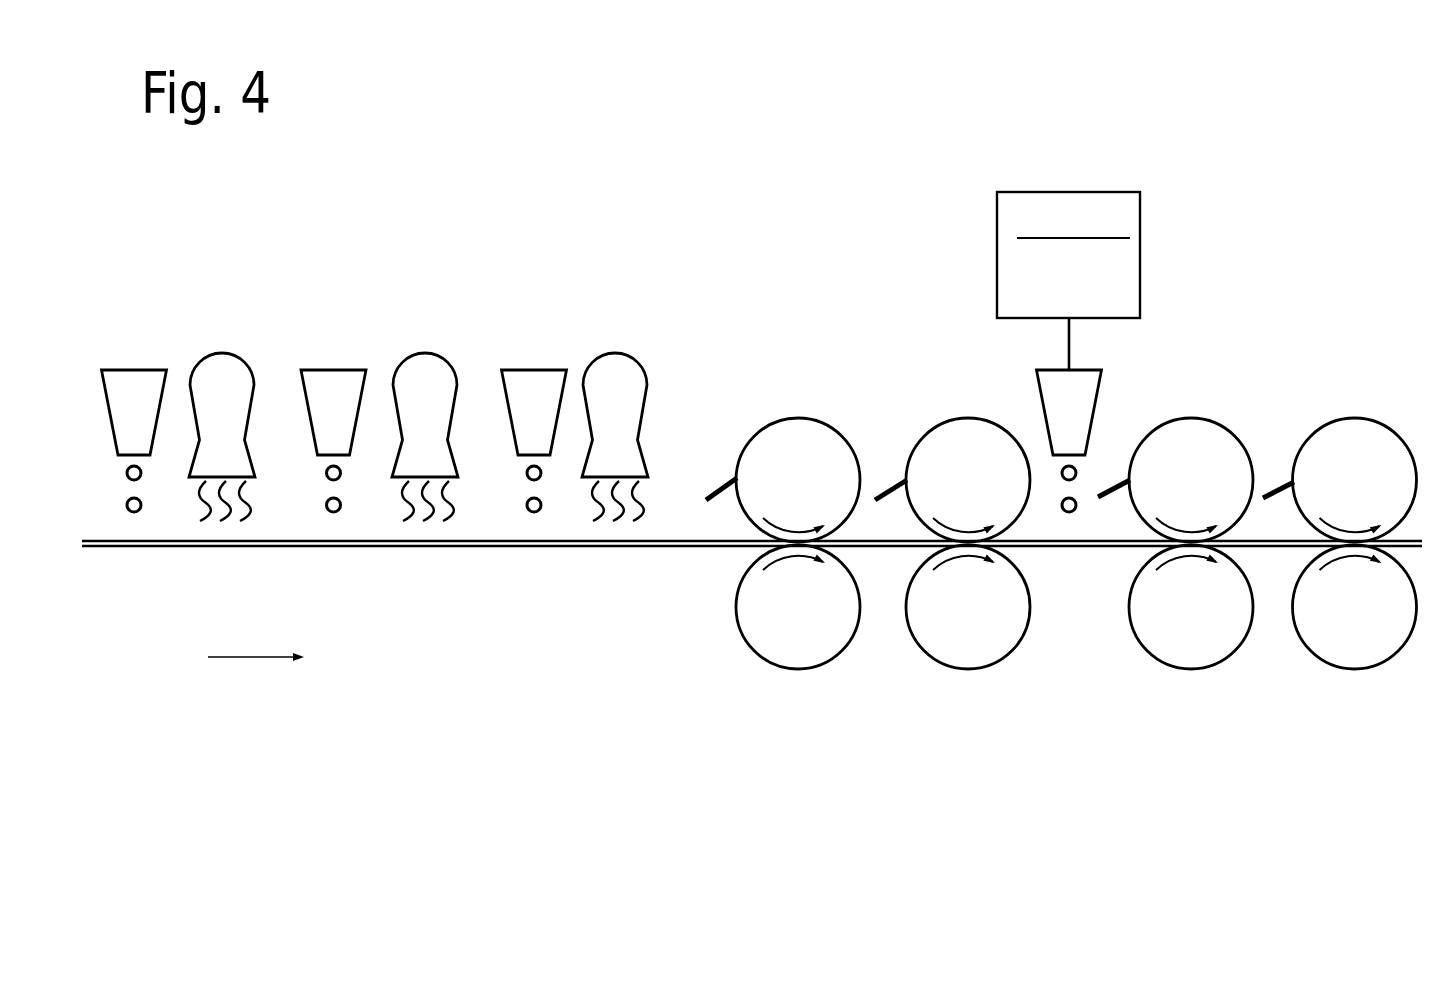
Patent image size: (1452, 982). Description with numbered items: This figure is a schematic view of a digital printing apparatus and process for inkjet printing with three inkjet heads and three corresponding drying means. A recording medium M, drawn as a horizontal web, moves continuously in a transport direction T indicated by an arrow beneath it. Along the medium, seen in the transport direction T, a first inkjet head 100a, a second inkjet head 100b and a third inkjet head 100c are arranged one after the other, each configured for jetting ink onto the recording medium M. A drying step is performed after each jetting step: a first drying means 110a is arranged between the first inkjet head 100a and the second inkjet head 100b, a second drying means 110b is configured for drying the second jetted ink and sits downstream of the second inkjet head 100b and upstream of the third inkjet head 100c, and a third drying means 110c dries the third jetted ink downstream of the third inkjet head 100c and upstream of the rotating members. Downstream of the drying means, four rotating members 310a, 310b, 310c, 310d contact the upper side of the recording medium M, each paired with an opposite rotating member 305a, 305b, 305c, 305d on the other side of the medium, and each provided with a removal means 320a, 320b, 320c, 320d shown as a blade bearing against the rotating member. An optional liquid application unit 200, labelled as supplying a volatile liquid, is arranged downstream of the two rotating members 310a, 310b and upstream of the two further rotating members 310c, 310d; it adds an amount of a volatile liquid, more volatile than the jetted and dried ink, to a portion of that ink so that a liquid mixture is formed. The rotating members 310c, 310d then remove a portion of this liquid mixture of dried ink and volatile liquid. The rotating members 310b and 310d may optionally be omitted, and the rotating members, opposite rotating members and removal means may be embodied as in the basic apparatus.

The first inkjet head 100a is at (132, 392).
The second inkjet head 100b is at (319, 378).
The third inkjet head 100c is at (528, 378).
The first drying means 110a is at (212, 372).
The second drying means 110b is at (417, 378).
The third drying means 110c is at (615, 377).
The liquid application unit 200 is at (971, 299).
The rotating member 310a is at (805, 443).
The rotating member 310b is at (977, 443).
The rotating member 310c is at (1212, 447).
The rotating member 310d is at (1367, 442).
The removal means 320a is at (723, 488).
The removal means 320b is at (907, 483).
The removal means 320c is at (1113, 487).
The removal means 320d is at (1287, 497).
The opposite rotating member 305a is at (810, 637).
The opposite rotating member 305b is at (947, 643).
The opposite rotating member 305c is at (1170, 637).
The opposite rotating member 305d is at (1337, 643).
The recording medium M is at (202, 543).
The transport direction T is at (256, 644).